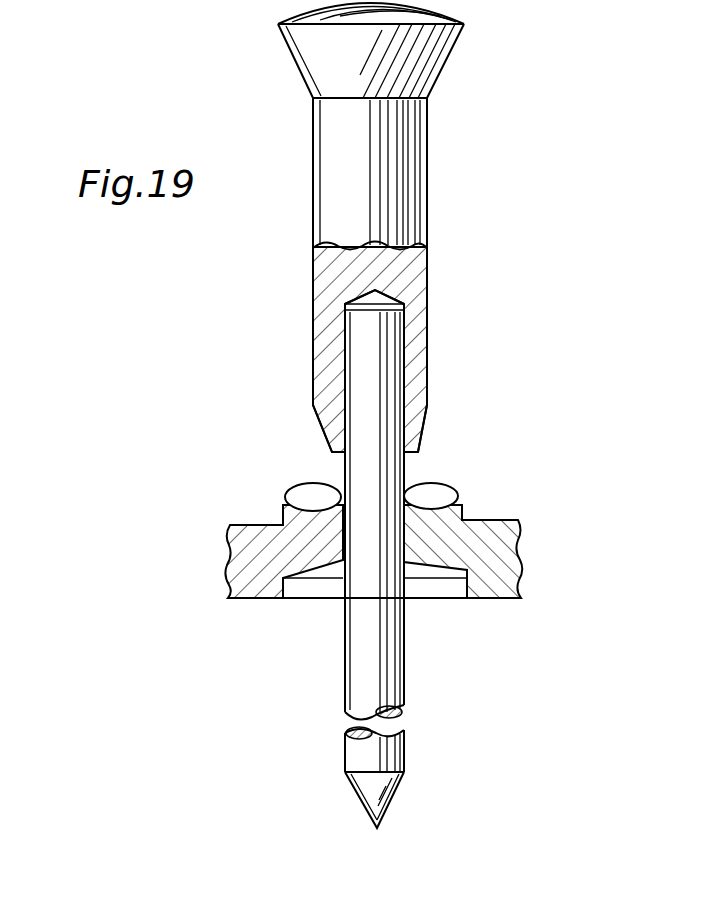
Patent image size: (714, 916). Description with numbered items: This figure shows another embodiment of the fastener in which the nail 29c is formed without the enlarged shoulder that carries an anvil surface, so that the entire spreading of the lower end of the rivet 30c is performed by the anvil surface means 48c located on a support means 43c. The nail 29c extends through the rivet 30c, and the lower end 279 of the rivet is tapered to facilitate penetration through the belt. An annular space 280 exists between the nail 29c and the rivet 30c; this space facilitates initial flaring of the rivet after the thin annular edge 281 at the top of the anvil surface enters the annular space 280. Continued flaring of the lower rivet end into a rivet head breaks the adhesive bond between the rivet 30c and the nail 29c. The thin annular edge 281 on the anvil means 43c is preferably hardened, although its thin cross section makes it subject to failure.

The rivet 30c is at (448, 258).
The lower end of the rivet 279 is at (432, 418).
The annular space 280 is at (337, 453).
The annular edge 281 is at (320, 483).
The anvil surface means 48c is at (417, 491).
The support means 43c is at (520, 517).
The nail 29c is at (413, 660).